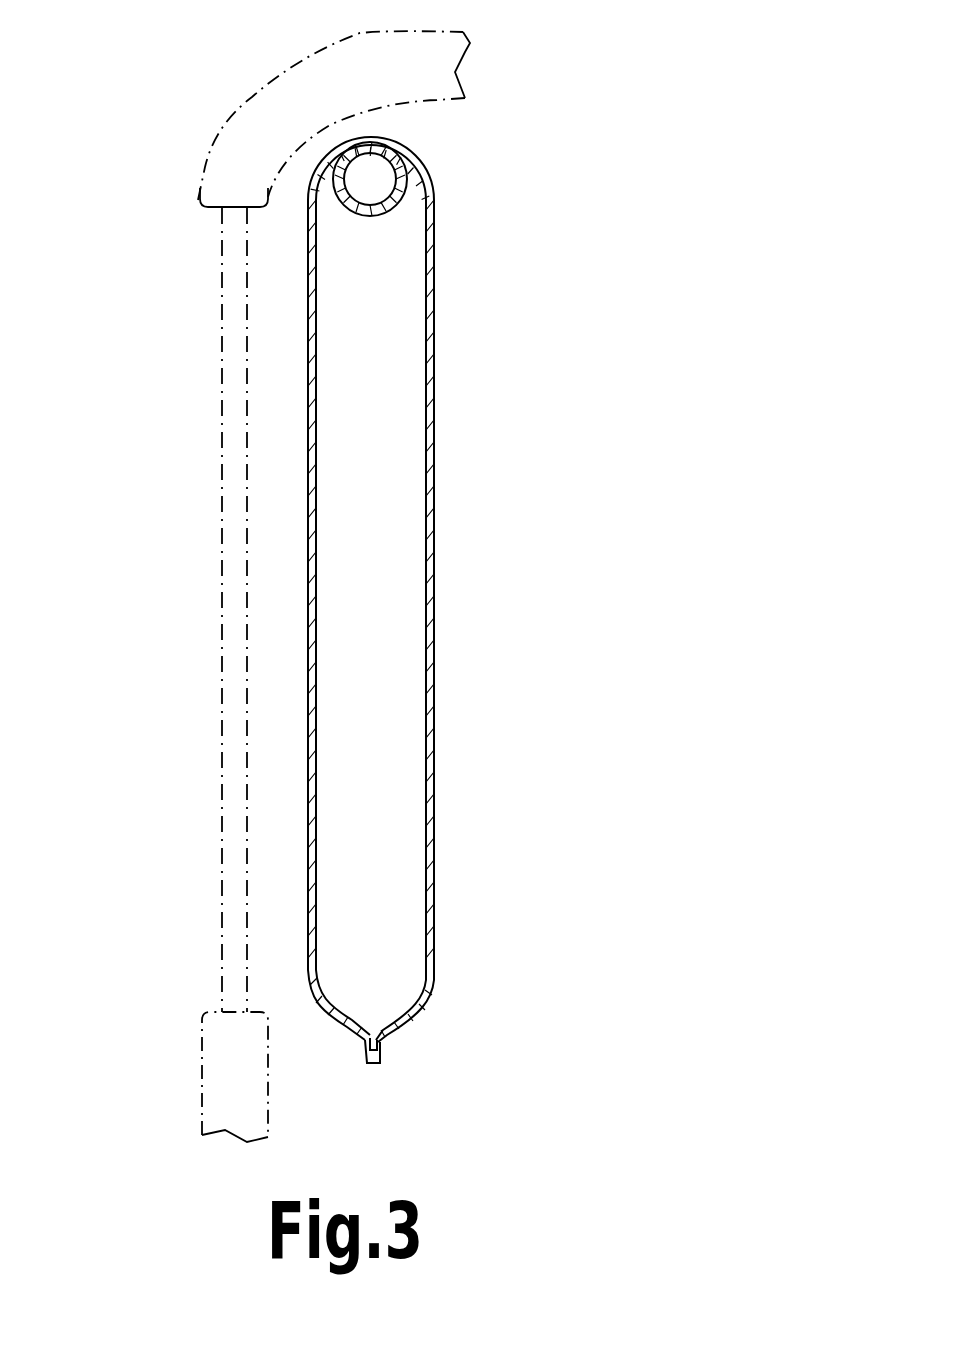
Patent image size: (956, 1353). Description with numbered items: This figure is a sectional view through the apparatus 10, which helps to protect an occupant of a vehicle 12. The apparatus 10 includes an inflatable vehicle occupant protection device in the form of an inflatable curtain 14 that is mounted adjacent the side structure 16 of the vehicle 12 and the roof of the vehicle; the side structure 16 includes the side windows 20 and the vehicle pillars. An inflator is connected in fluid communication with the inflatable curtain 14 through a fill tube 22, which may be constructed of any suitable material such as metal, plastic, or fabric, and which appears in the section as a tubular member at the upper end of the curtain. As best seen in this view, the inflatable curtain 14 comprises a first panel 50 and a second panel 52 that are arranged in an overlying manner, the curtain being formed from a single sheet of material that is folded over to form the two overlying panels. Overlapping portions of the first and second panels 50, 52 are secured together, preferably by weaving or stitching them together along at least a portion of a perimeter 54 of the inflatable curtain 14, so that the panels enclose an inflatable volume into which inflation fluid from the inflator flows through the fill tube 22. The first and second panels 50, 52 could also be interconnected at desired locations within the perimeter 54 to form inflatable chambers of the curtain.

The apparatus 10 is at (407, 580).
The vehicle 12 is at (545, 33).
The inflatable curtain 14 is at (429, 649).
The side structure 16 is at (252, 125).
The side windows 20 is at (233, 700).
The fill tube 22 is at (397, 202).
The first panel 50 is at (315, 598).
The second panel 52 is at (428, 675).
The perimeter 54 is at (378, 1063).